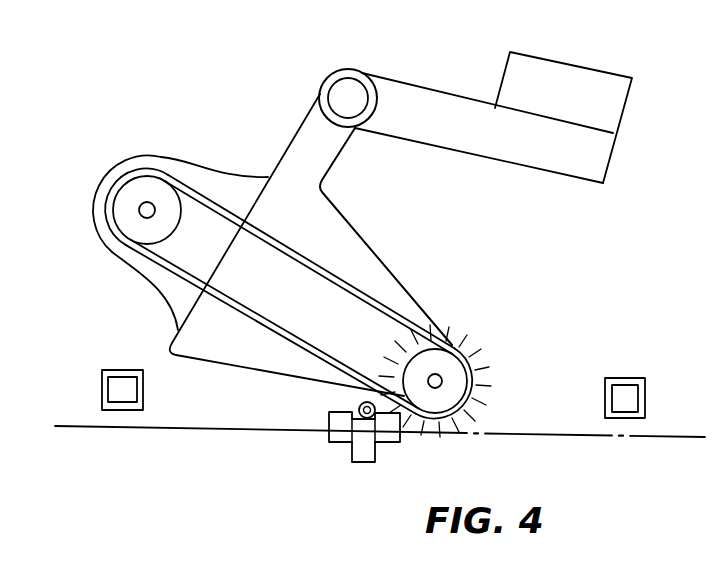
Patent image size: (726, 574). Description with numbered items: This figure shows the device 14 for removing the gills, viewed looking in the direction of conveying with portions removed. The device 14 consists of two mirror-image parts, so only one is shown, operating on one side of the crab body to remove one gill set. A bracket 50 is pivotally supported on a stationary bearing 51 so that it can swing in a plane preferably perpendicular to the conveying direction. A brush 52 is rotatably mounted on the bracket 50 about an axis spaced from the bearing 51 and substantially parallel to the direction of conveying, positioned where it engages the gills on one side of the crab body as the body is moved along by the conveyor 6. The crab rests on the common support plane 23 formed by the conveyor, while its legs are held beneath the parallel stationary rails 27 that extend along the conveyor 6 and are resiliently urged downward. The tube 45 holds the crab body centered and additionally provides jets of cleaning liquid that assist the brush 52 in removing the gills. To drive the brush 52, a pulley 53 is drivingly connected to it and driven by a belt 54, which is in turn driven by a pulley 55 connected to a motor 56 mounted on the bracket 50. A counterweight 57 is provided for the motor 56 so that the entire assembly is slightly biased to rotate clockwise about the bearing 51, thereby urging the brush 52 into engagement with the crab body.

The device for removing the gills 14 is at (458, 72).
The counterweight 57 is at (617, 103).
The stationary bearing 51 is at (353, 88).
The bracket 50 is at (472, 143).
The motor 56 is at (121, 173).
The pulley 55 is at (152, 192).
The belt 54 is at (372, 296).
The pulley 53 is at (447, 367).
The brush 52 is at (483, 388).
The tube 45 is at (356, 404).
The conveyor 6 is at (366, 451).
The common support plane 23 is at (540, 427).
The rails 27 is at (103, 373).